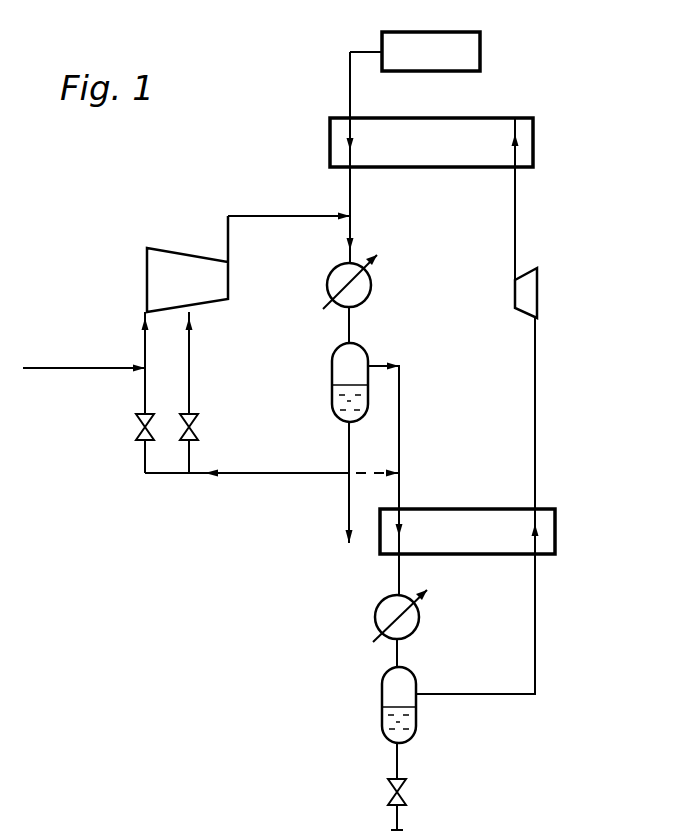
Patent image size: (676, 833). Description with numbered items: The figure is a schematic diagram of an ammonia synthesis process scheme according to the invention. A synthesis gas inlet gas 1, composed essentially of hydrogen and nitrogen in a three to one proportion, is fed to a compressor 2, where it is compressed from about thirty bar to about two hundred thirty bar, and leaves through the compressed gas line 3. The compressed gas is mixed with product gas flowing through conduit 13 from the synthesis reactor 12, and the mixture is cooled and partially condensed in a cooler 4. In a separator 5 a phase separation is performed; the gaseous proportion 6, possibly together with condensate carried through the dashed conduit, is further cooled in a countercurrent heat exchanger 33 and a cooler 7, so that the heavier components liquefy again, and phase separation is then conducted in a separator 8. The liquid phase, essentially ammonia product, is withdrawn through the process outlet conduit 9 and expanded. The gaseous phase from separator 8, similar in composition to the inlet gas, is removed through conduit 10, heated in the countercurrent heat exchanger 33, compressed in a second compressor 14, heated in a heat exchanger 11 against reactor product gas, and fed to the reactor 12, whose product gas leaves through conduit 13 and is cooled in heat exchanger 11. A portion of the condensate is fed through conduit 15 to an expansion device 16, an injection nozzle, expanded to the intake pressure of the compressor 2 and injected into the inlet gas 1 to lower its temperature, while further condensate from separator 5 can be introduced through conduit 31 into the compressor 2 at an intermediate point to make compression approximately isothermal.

The synthesis gas inlet gas 1 is at (56, 367).
The compressor 2 is at (150, 283).
The compressed gas line 3 is at (349, 231).
The cooler 4 is at (370, 288).
The separator 5 is at (332, 378).
The gaseous proportion 6 is at (400, 431).
The cooler 7 is at (381, 612).
The separator 8 is at (382, 697).
The process outlet conduit 9 is at (398, 761).
The conduit 10 is at (537, 433).
The heat exchanger 11 is at (533, 146).
The synthesis reactor 12 is at (470, 71).
The conduit 13 is at (349, 93).
The second compressor 14 is at (538, 298).
The conduit 15 is at (262, 473).
The expansion device 16 is at (138, 431).
The conduit 31 is at (190, 456).
The countercurrent heat exchanger 33 is at (497, 553).